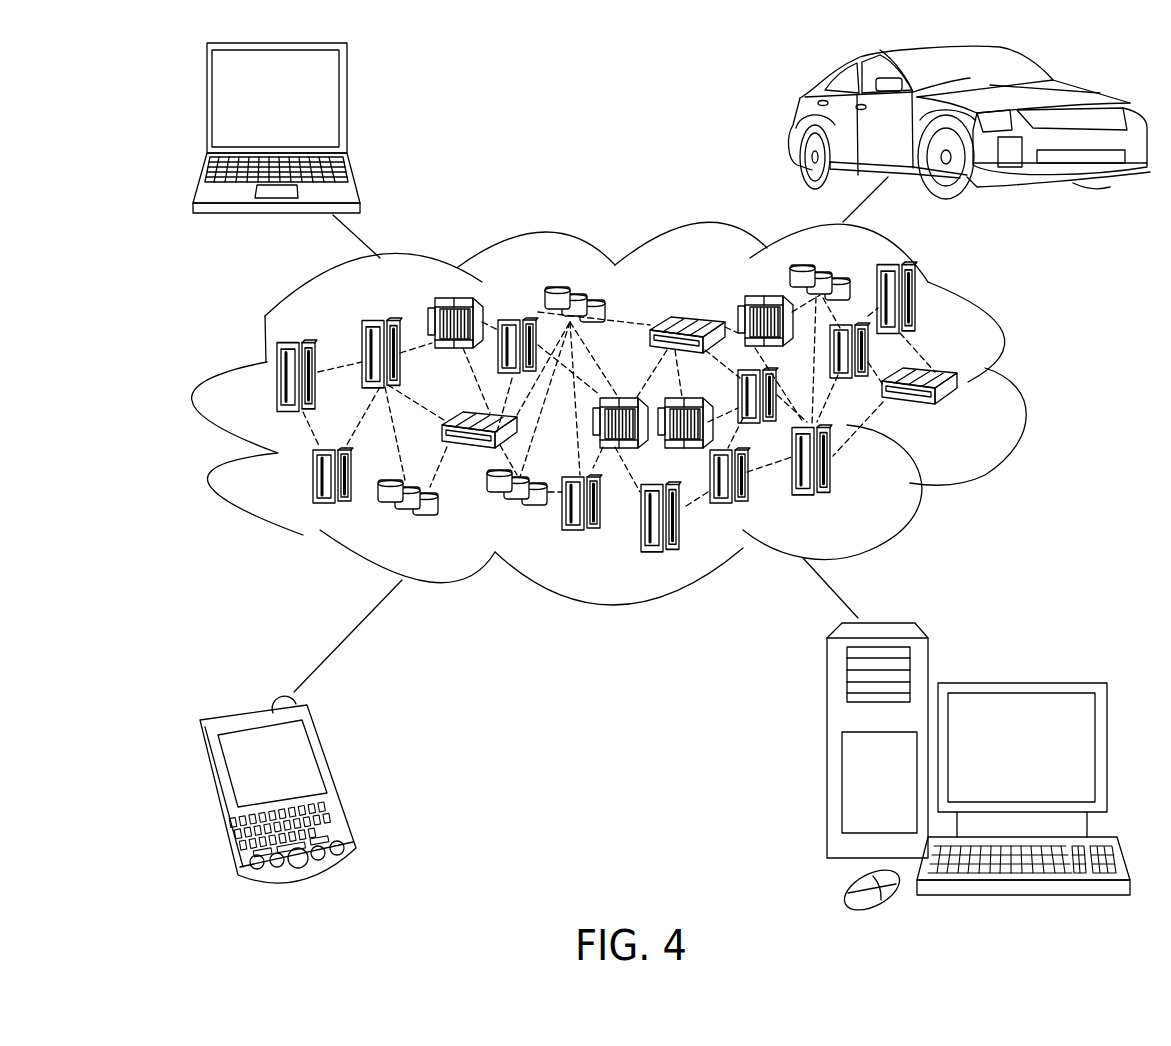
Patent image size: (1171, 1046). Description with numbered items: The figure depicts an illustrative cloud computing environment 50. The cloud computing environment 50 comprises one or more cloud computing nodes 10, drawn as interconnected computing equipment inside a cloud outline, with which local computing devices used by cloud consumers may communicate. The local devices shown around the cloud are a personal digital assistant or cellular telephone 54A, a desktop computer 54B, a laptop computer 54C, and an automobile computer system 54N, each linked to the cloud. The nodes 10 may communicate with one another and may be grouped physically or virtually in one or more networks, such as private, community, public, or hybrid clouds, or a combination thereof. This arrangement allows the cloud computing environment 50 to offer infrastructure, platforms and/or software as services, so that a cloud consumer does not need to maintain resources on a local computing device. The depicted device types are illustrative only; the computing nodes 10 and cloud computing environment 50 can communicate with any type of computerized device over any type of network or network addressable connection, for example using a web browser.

The cloud computing environment 50 is at (1020, 383).
The cloud computing node 10 is at (967, 421).
The personal digital assistant (PDA) or cellular telephone 54A is at (337, 775).
The desktop computer 54B is at (1018, 682).
The laptop computer 54C is at (347, 107).
The automobile computer system 54N is at (795, 122).